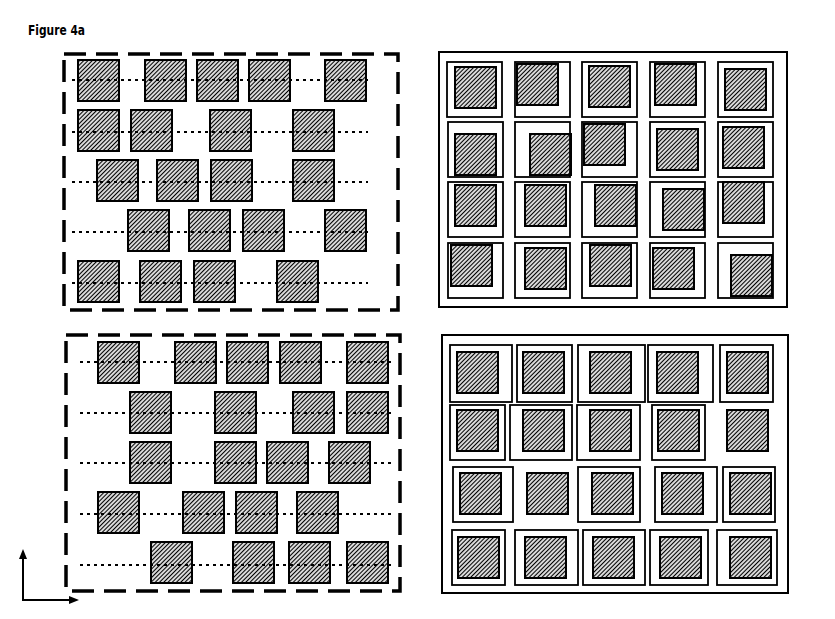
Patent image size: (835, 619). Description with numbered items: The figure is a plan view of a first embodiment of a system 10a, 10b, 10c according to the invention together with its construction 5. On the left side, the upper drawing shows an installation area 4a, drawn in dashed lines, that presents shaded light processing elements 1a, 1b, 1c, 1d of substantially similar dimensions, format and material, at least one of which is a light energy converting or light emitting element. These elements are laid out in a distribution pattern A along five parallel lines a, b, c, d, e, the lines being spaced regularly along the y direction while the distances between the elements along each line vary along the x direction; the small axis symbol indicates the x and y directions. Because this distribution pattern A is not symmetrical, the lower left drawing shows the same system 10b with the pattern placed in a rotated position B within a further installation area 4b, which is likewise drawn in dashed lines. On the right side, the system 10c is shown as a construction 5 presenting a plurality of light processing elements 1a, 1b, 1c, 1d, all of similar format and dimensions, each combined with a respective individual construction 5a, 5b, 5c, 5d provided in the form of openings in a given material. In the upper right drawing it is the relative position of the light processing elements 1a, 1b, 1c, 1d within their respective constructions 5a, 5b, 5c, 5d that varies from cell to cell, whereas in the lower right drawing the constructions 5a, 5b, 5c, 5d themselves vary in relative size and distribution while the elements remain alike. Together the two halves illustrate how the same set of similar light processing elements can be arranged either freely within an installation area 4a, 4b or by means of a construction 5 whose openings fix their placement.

The system 10a is at (212, 179).
The system 10b is at (214, 460).
The system 10c is at (602, 313).
The installation area 4a is at (201, 181).
The installation area 4b is at (211, 462).
The distribution pattern A is at (47, 147).
The rotated position B is at (215, 463).
The light processing element 1a is at (288, 226).
The light processing element 1b is at (288, 280).
The light processing element 1c is at (299, 337).
The light processing element 1d is at (288, 411).
The parallel line a is at (229, 73).
The parallel line b is at (229, 125).
The parallel line c is at (229, 175).
The parallel line d is at (229, 225).
The parallel line e is at (229, 275).
The construction 5 is at (597, 323).
The construction 5a is at (479, 232).
The construction 5b is at (477, 291).
The construction 5c is at (480, 352).
The construction 5d is at (476, 414).
The x direction x is at (50, 591).
The y direction y is at (32, 574).